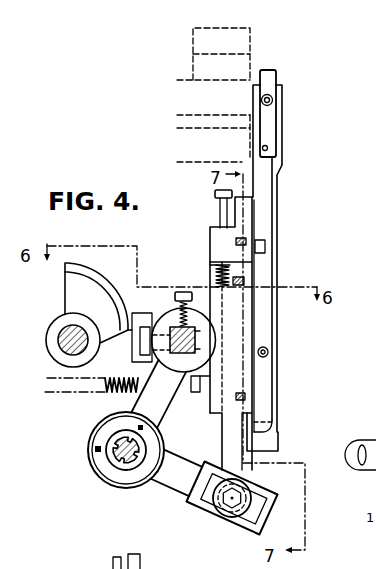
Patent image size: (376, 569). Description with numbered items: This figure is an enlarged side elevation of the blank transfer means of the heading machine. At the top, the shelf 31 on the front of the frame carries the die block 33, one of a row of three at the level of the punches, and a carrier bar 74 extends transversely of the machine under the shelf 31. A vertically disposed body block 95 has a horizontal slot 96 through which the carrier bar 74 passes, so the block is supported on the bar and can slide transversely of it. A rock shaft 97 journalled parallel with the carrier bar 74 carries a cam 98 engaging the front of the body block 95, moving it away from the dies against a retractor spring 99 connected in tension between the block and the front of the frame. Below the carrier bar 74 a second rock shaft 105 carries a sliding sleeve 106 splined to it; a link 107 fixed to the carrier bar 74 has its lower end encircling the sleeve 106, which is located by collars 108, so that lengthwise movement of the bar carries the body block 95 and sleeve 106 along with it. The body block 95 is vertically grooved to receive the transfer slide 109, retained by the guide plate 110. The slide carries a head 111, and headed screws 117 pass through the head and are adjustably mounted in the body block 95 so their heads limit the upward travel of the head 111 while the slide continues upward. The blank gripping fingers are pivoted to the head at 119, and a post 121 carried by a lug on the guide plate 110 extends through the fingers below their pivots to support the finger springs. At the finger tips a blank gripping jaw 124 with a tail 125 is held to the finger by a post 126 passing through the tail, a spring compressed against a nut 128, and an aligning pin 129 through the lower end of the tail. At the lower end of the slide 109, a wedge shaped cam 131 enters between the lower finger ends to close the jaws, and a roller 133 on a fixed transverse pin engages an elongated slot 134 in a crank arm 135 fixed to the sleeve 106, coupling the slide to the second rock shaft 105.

The die block 33 is at (213, 54).
The shelf 31 is at (213, 138).
The blank gripping jaw 124 is at (278, 78).
The tail 125 is at (268, 133).
The nut 128 is at (273, 97).
The post 126 is at (272, 102).
The aligning pin 129 is at (268, 148).
The guide plate 110 is at (248, 378).
The post 121 is at (268, 352).
The wedge shaped cam 131 is at (278, 438).
The headed screw 117 is at (218, 207).
The head 111 is at (210, 238).
The pivot 119 is at (267, 242).
The transfer slide 109 is at (226, 437).
The cam 98 is at (98, 303).
The rock shaft 97 is at (60, 344).
The horizontal slot 96 is at (140, 341).
The carrier bar 74 is at (205, 311).
The body block 95 is at (196, 322).
The retractor spring 99 is at (118, 403).
The link 107 is at (158, 394).
The collar 108 is at (120, 478).
The sliding sleeve 106 is at (107, 466).
The second rock shaft 105 is at (107, 445).
The crank arm 135 is at (176, 473).
The elongated slot 134 is at (258, 515).
The roller 133 is at (207, 515).